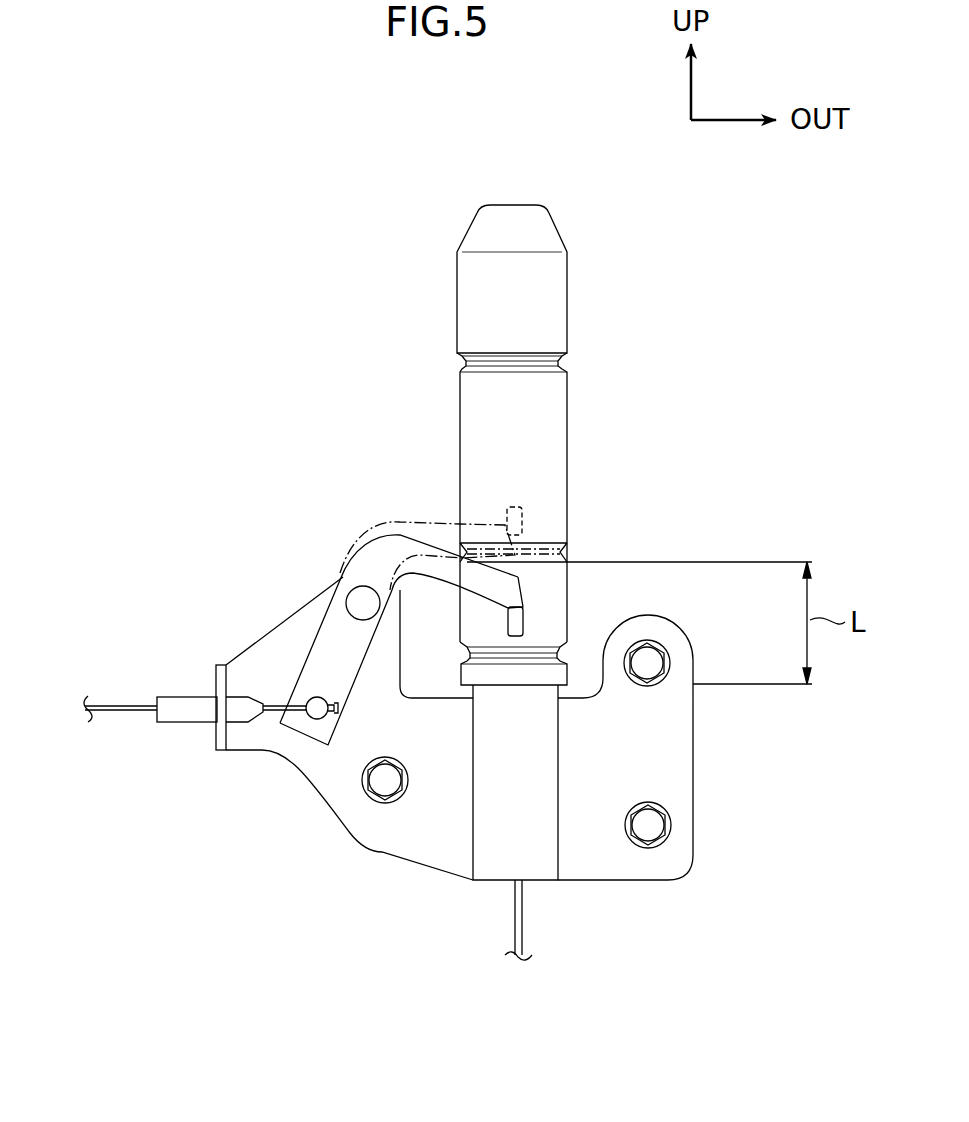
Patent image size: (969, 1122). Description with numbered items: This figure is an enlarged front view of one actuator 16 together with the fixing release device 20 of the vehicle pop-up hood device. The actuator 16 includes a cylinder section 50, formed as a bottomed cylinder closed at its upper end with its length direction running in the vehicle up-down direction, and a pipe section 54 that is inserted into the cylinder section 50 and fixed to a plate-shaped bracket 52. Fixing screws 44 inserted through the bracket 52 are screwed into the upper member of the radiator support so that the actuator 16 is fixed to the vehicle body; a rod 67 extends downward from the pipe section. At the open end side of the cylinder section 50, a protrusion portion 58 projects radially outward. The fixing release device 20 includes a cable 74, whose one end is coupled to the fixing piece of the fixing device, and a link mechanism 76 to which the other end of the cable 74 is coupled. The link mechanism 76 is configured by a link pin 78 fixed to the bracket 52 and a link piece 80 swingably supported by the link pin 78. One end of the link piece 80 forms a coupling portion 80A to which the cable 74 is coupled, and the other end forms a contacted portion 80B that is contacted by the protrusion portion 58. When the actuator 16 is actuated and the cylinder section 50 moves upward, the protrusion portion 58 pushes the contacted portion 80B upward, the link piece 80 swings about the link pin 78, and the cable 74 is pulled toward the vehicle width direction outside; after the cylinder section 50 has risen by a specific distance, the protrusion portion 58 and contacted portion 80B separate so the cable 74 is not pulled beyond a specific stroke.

The actuator 16 is at (571, 445).
The cylinder section 50 is at (567, 325).
The protrusion portion 58 is at (522, 515).
The pipe section 54 is at (558, 755).
The bracket 52 is at (693, 725).
The rod 67 is at (522, 937).
The fixing screws 44 is at (385, 805).
The fixing release device 20 is at (253, 783).
The link mechanism 76 is at (307, 558).
The link piece 80 is at (347, 565).
The coupling portion 80A is at (231, 650).
The contacted portion 80B is at (508, 622).
The link pin 78 is at (357, 620).
The cable 74 is at (127, 702).